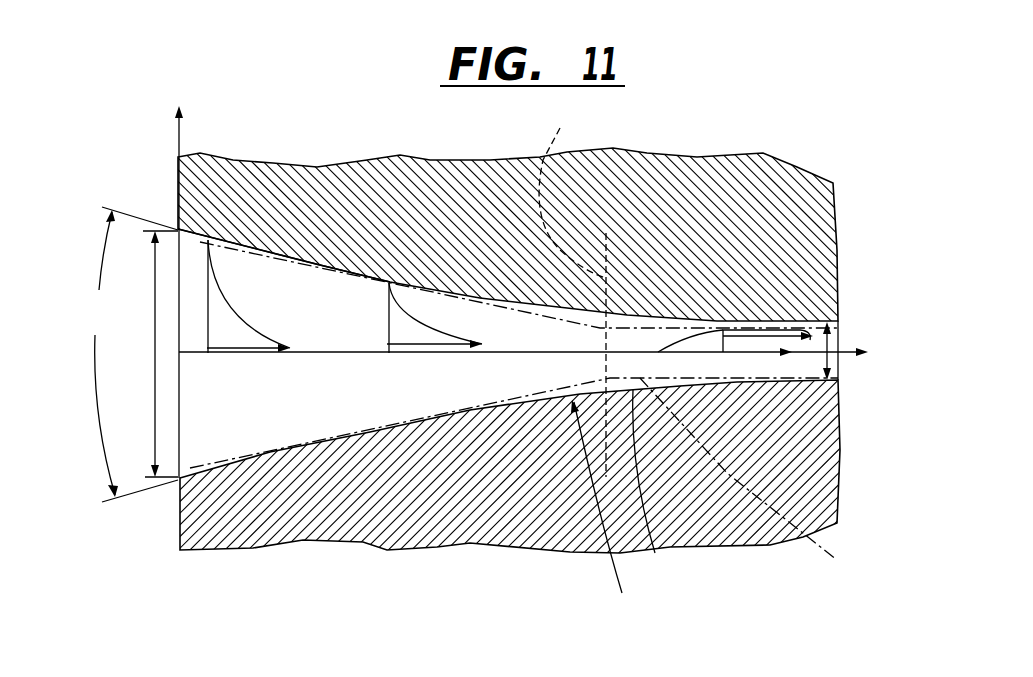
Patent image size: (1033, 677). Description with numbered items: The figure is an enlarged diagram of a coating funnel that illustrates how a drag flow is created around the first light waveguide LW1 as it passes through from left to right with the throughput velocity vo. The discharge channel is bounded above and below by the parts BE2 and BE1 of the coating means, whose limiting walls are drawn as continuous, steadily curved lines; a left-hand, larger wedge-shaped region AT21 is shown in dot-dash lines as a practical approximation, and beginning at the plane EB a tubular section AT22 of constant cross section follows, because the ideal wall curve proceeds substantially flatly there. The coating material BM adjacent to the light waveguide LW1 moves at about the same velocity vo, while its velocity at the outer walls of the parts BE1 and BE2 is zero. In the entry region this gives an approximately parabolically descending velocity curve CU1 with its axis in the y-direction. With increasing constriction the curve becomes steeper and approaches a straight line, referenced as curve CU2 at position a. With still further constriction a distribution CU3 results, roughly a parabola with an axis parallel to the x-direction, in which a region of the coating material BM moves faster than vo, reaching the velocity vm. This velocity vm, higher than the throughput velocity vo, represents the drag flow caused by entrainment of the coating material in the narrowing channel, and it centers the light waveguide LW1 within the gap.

The part of the coating means BE2 is at (723, 190).
The part of the coating means BE1 is at (553, 518).
The coating material BM is at (297, 277).
The velocity curve in the entry region CU1 is at (237, 308).
The velocity curve at position a CU2 is at (440, 320).
The velocity curve with increased constriction CU3 is at (766, 330).
The plane EB is at (572, 291).
The first light waveguide LW1 is at (845, 353).
The wedge-shaped gap AT21 is at (507, 398).
The tubular section AT22 is at (766, 474).
The throughput velocity vo is at (252, 349).
The maximum drag flow velocity vm is at (681, 354).
The x-direction x is at (523, 341).
The y-direction y is at (192, 292).
The position a is at (396, 385).